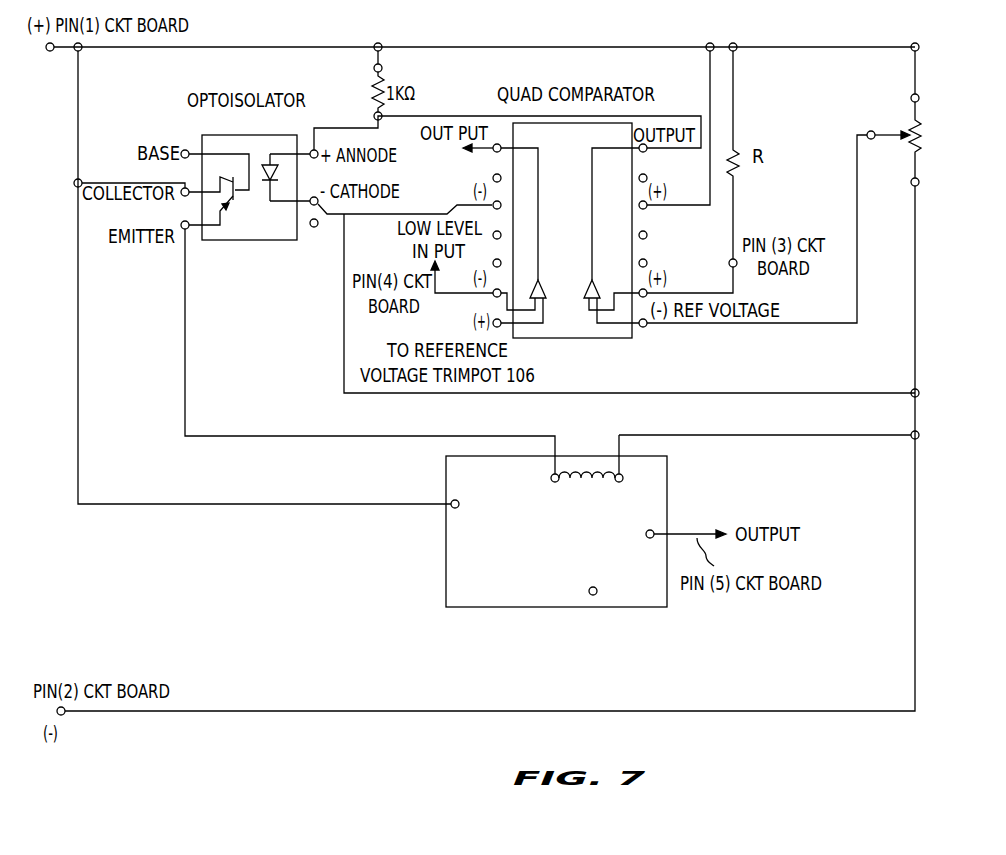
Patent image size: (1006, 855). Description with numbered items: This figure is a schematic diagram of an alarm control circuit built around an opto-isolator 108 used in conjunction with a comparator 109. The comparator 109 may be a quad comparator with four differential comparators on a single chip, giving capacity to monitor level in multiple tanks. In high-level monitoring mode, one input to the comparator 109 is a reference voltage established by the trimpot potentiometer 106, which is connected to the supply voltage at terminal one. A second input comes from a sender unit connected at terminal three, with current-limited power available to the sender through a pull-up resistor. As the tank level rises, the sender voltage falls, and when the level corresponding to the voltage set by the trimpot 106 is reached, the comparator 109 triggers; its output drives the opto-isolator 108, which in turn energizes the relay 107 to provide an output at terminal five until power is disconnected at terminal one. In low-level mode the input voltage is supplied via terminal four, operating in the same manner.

The trimpot potentiometer 106 is at (818, 187).
The relay 107 is at (446, 582).
The opto-isolator 108 is at (232, 241).
The comparator 109 is at (590, 338).